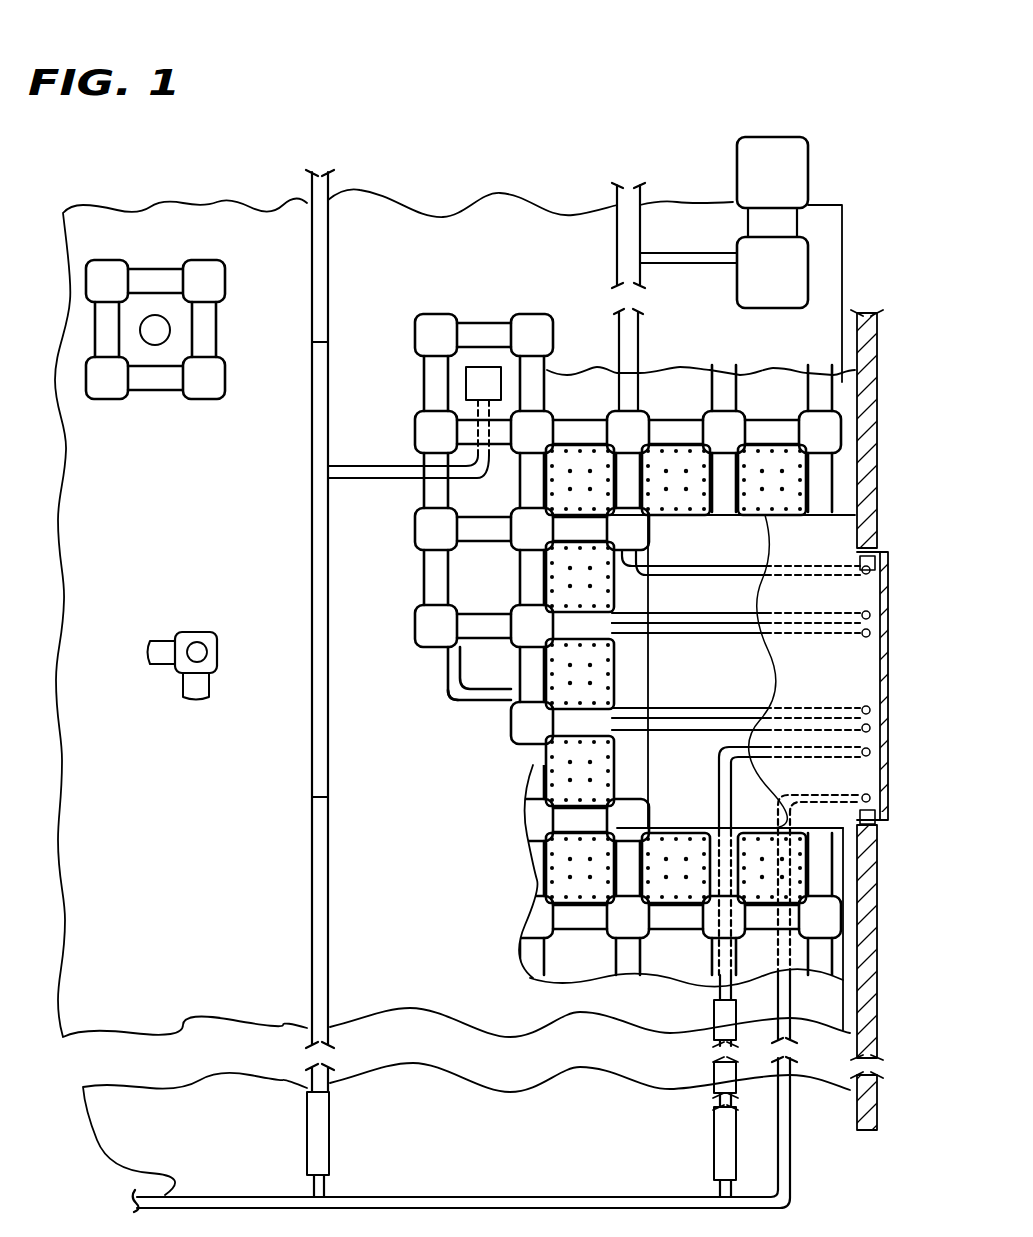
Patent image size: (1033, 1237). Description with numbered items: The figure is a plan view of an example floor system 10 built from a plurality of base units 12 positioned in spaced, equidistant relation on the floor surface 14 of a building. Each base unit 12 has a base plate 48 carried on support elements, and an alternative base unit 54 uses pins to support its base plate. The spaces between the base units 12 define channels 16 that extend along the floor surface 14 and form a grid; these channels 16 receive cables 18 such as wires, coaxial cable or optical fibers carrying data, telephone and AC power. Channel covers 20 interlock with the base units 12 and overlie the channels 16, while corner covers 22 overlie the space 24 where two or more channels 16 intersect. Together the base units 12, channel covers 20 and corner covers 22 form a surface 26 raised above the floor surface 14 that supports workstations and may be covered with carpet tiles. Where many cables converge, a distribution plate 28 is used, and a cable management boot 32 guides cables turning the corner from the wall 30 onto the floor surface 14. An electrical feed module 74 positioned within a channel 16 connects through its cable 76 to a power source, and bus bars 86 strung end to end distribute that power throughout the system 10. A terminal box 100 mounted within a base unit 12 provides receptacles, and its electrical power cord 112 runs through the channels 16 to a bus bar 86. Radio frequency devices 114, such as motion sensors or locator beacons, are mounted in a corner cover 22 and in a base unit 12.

The floor system 10 is at (560, 268).
The base unit 12 is at (462, 358).
The floor surface 14 is at (718, 343).
The channel 16 is at (718, 1080).
The cable 18 is at (742, 618).
The channel cover 20 is at (420, 582).
The corner cover 22 is at (525, 635).
The space 24 is at (455, 655).
The surface 26 is at (446, 708).
The distribution plate 28 is at (705, 793).
The wall 30 is at (862, 313).
The cable management boot 32 is at (862, 592).
The base plate 48 is at (875, 828).
The base unit 54 is at (618, 680).
The electrical feed module 74 is at (307, 1133).
The cable 76 is at (560, 1160).
The bus bar 86 is at (310, 897).
The terminal box 100 is at (466, 380).
The electrical power cord 112 is at (428, 487).
The radio frequency device 114 is at (146, 316).